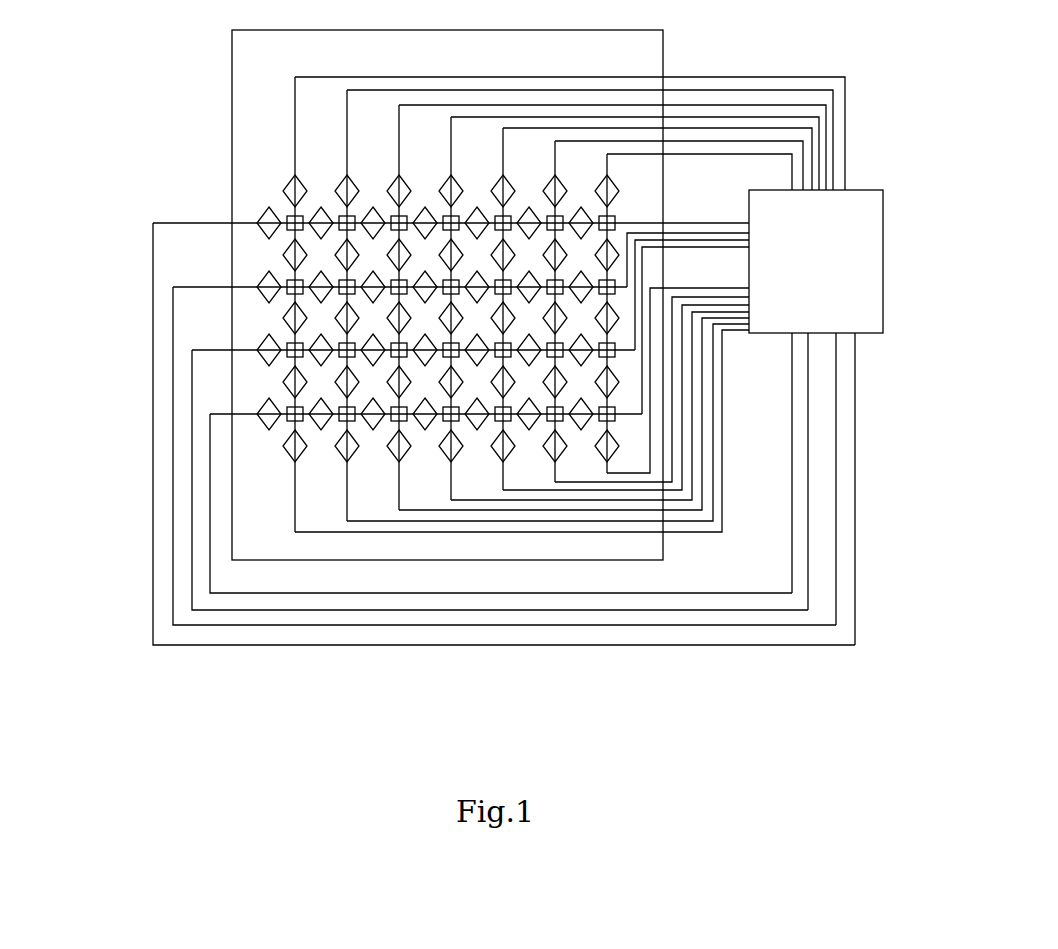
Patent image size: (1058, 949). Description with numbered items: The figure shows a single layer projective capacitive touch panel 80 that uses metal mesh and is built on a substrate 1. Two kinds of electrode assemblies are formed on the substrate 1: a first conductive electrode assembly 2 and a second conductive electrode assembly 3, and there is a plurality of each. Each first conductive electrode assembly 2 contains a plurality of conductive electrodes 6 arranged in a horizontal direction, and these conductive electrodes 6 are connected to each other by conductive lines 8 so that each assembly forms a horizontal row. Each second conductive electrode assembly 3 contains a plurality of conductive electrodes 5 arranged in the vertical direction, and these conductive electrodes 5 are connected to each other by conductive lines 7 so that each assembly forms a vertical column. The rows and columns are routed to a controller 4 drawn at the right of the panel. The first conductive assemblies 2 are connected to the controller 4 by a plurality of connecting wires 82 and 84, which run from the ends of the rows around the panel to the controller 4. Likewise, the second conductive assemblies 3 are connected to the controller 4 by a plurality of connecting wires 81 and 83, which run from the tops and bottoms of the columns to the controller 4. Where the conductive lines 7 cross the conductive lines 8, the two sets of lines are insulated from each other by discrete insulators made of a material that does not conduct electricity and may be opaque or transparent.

The substrate 1 is at (268, 58).
The first conductive electrode assembly 2 is at (273, 237).
The second conductive electrode assembly 3 is at (283, 180).
The controller 4 is at (857, 212).
The conductive electrode 5 is at (307, 182).
The conductive electrode 6 is at (283, 237).
The conductive line 7 is at (293, 300).
The conductive line 8 is at (361, 212).
The touch panel 80 is at (135, 460).
The connecting wire 81 is at (570, 125).
The connecting wire 82 is at (688, 311).
The connecting wire 83 is at (522, 403).
The connecting wire 84 is at (833, 489).